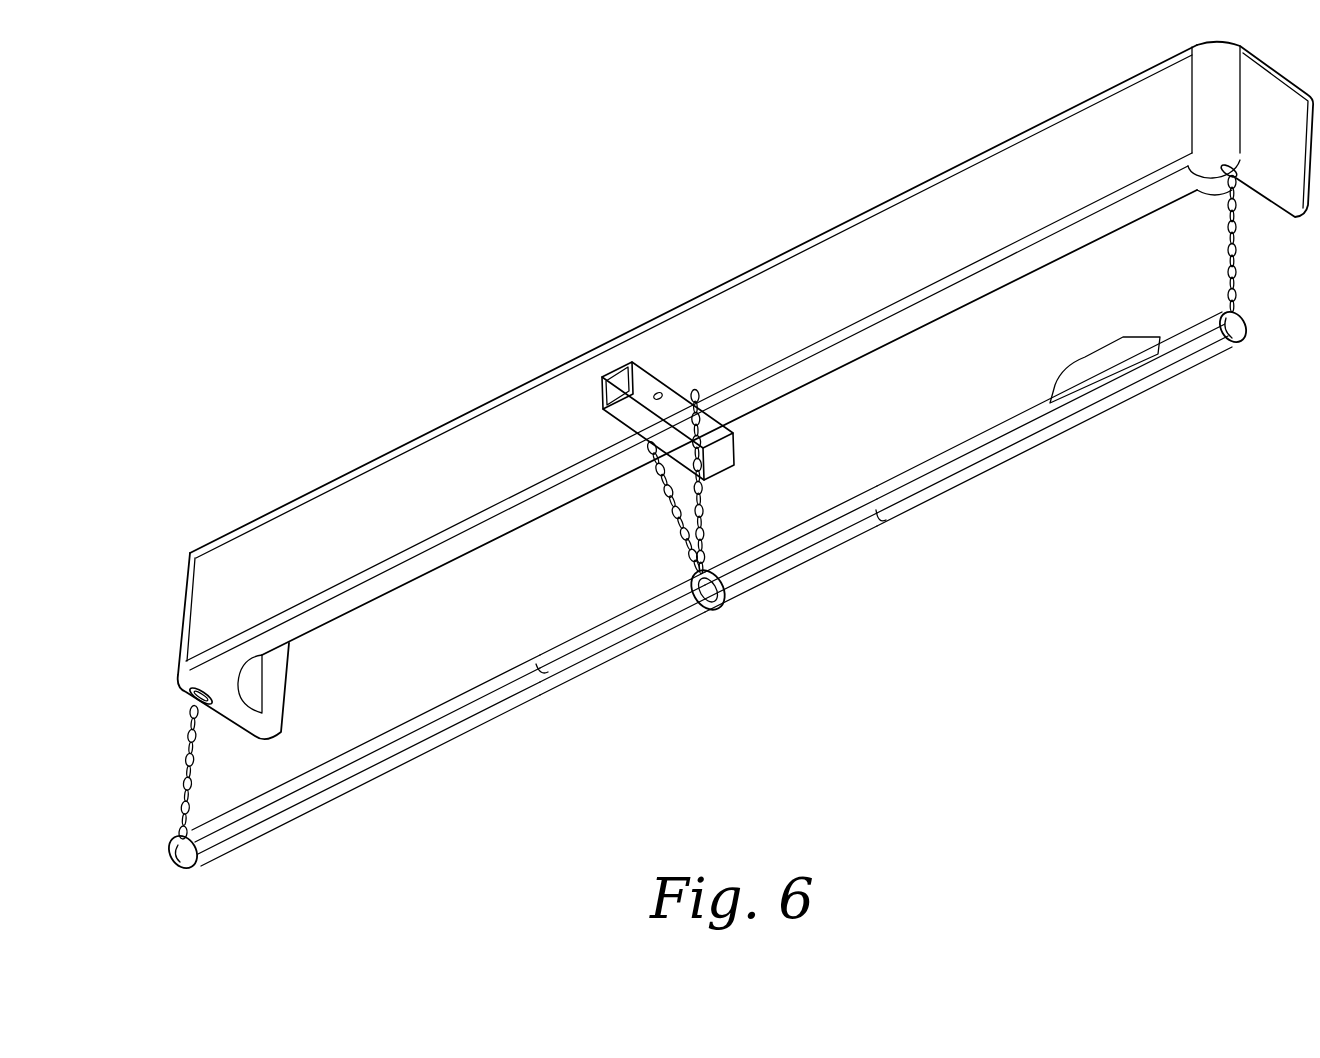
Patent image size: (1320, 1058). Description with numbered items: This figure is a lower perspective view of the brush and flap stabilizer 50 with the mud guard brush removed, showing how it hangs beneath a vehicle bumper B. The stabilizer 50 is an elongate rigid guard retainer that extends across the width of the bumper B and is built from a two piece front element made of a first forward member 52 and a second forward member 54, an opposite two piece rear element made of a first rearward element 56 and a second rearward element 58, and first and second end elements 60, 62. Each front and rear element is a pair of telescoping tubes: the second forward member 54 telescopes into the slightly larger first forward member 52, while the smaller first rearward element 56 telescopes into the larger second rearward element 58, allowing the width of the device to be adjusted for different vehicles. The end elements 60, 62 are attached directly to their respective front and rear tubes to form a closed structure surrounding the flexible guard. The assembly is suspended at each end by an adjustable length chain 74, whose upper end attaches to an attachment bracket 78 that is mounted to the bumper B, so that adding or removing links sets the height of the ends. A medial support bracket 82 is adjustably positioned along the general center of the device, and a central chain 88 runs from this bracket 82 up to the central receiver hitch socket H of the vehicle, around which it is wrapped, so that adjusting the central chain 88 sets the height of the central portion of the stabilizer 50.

The bumper B is at (745, 390).
The central receiver hitch socket H is at (655, 391).
The stabilizer 50 is at (742, 664).
The first forward member 52 is at (366, 760).
The second forward member 54 is at (1054, 419).
The first rearward element 56 is at (529, 656).
The second rearward element 58 is at (804, 512).
The first end element 60 is at (175, 882).
The second end element 62 is at (1253, 364).
The adjustable length chain 74 is at (707, 508).
The attachment bracket 78 is at (682, 475).
The medial support bracket 82 is at (667, 583).
The central chain 88 is at (717, 481).